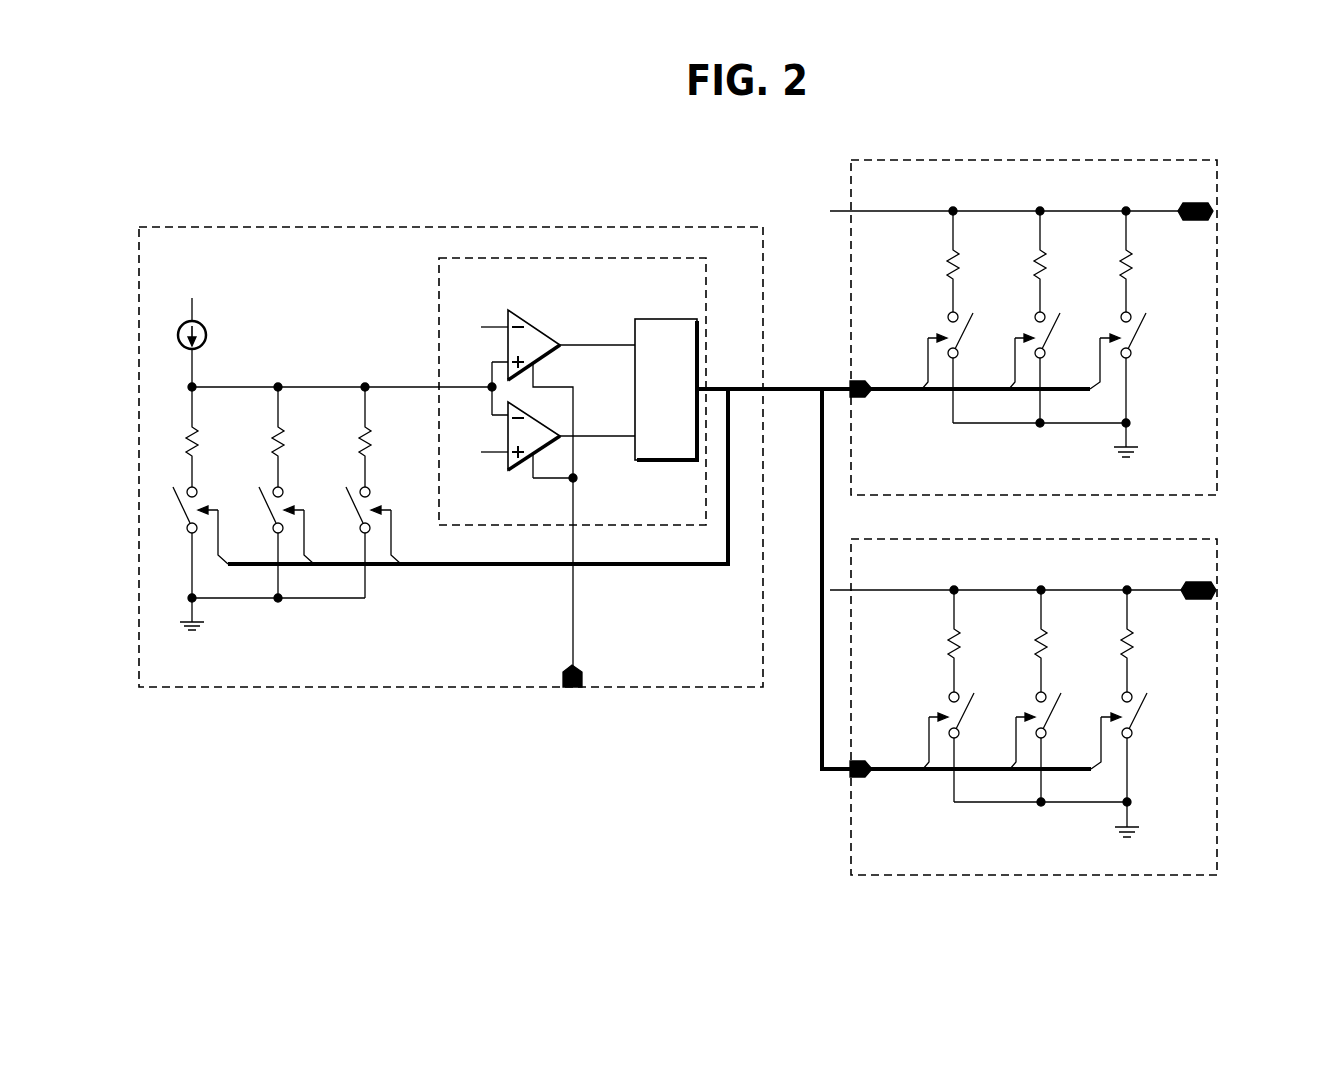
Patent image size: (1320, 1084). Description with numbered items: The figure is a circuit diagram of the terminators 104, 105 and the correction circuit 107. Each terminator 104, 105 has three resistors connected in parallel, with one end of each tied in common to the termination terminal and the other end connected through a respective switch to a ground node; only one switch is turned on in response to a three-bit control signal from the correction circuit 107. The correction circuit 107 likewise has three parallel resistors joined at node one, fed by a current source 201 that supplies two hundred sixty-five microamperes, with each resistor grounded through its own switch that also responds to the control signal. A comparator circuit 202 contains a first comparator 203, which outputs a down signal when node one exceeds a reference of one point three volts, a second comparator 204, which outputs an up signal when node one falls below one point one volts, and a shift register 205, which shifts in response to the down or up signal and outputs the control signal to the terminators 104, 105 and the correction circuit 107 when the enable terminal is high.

The terminator 104 is at (1022, 160).
The terminator 105 is at (923, 876).
The correction circuit 107 is at (445, 227).
The current source 201 is at (207, 327).
The comparator circuit 202 is at (640, 258).
The first comparator 203 is at (542, 331).
The second comparator 204 is at (512, 464).
The shift register 205 is at (651, 462).